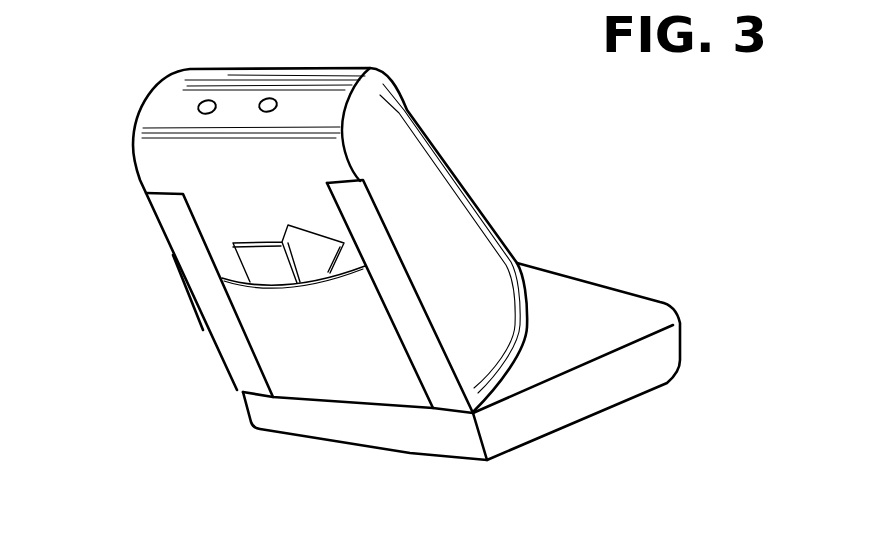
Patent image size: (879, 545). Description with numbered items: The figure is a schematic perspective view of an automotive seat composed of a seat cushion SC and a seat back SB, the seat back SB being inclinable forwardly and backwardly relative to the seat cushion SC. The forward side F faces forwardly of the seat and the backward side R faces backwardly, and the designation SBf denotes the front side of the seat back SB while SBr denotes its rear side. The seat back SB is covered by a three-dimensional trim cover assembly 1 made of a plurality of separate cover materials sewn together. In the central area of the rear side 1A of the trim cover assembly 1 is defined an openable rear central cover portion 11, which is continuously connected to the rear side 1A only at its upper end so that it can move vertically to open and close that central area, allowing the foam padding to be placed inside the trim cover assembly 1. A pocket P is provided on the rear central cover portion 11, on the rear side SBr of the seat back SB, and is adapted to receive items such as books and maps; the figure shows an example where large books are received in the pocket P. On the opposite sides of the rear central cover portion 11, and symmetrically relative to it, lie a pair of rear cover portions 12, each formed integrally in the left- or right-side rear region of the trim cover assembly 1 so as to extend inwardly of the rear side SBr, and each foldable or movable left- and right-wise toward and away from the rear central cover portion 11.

The trim cover assembly 1 is at (165, 112).
The rear side of trim cover assembly 1A is at (205, 377).
The seat back SB is at (470, 188).
The front side of seat back SBf is at (450, 157).
The rear side of seat back SBr is at (190, 177).
The seat cushion SC is at (642, 317).
The rear central cover portion 11 is at (217, 223).
The rear cover portions 12 is at (210, 315).
The pocket P is at (315, 372).
The backward side R is at (58, 229).
The forward side F is at (752, 179).